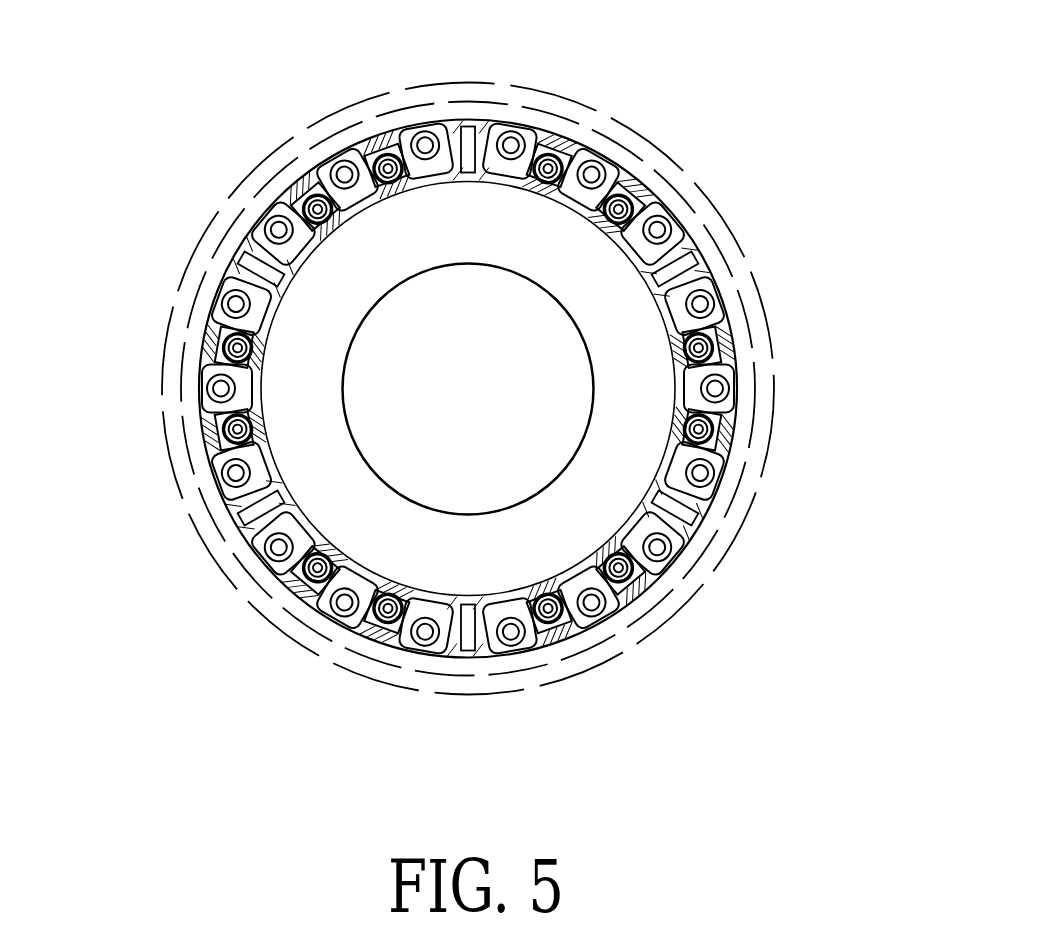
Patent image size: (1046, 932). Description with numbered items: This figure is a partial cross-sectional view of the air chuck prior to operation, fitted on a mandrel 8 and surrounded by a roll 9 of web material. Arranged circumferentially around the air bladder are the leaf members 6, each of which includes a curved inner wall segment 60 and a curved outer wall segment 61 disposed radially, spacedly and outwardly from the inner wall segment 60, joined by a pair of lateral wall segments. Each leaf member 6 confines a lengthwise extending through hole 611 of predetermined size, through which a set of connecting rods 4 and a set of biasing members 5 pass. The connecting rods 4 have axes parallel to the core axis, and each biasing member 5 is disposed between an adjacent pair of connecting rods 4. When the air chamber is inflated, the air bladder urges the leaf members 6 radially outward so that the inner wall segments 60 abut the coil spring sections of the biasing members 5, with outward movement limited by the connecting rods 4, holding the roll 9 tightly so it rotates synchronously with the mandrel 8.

The connecting rod 4 is at (707, 306).
The biasing member 5 is at (707, 437).
The leaf member 6 is at (643, 190).
The inner wall segment 60 is at (533, 140).
The outer wall segment 61 is at (683, 228).
The through hole 611 is at (672, 520).
The mandrel 8 is at (343, 389).
The roll 9 is at (183, 267).